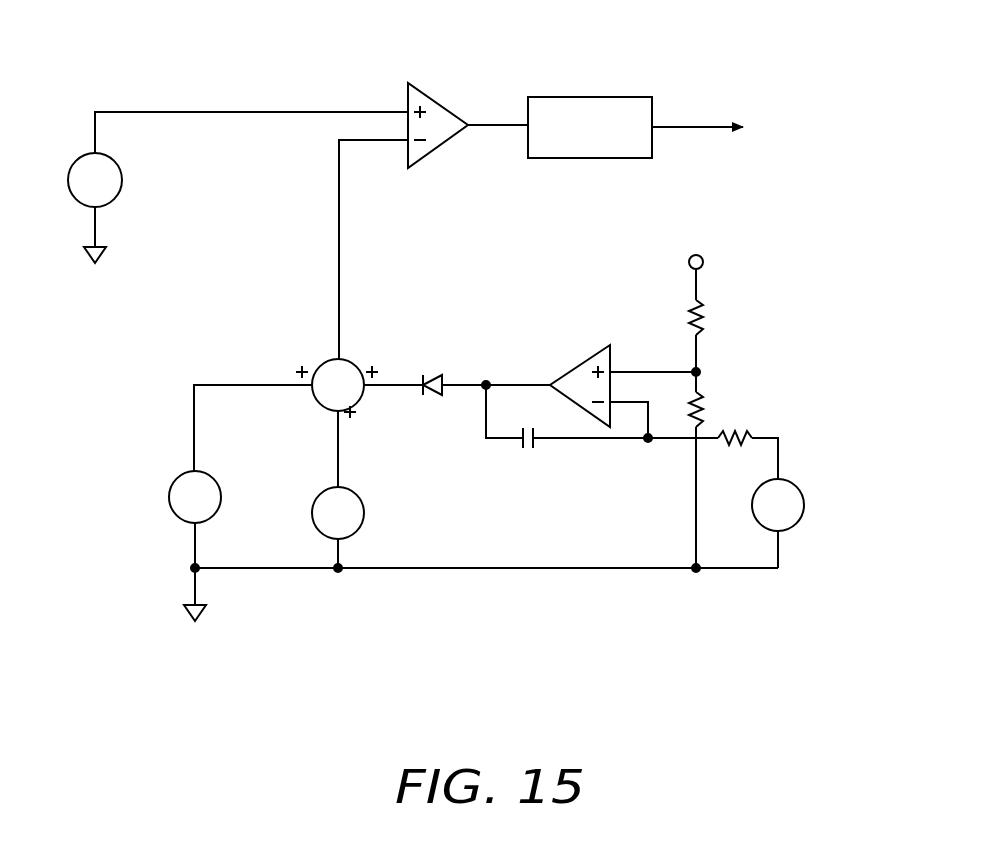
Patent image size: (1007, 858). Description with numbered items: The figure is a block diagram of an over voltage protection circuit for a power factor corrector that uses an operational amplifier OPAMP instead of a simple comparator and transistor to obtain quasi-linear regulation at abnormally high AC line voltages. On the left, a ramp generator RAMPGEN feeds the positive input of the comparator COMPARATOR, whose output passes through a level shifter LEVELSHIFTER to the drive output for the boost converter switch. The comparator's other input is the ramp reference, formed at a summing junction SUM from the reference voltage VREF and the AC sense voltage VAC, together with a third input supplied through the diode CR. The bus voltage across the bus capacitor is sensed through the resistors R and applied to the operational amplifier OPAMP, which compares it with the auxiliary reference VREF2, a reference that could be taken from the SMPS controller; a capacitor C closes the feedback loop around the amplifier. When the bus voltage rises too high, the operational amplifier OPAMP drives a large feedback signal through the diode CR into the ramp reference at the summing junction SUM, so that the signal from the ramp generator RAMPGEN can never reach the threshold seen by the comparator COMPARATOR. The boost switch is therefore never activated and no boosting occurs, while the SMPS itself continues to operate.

The ramp generator RAMPGEN is at (62, 190).
The comparator COMPARATOR is at (440, 100).
The level shifter LEVELSHIFTER is at (674, 127).
The summing junction SUM is at (308, 423).
The reference voltage VREF is at (167, 546).
The AC sense voltage VAC is at (366, 510).
The diode CR is at (484, 370).
The operational amplifier OPAMP is at (568, 348).
The capacitor C is at (602, 431).
The resistor R is at (752, 408).
The auxiliary reference VREF2 is at (811, 497).